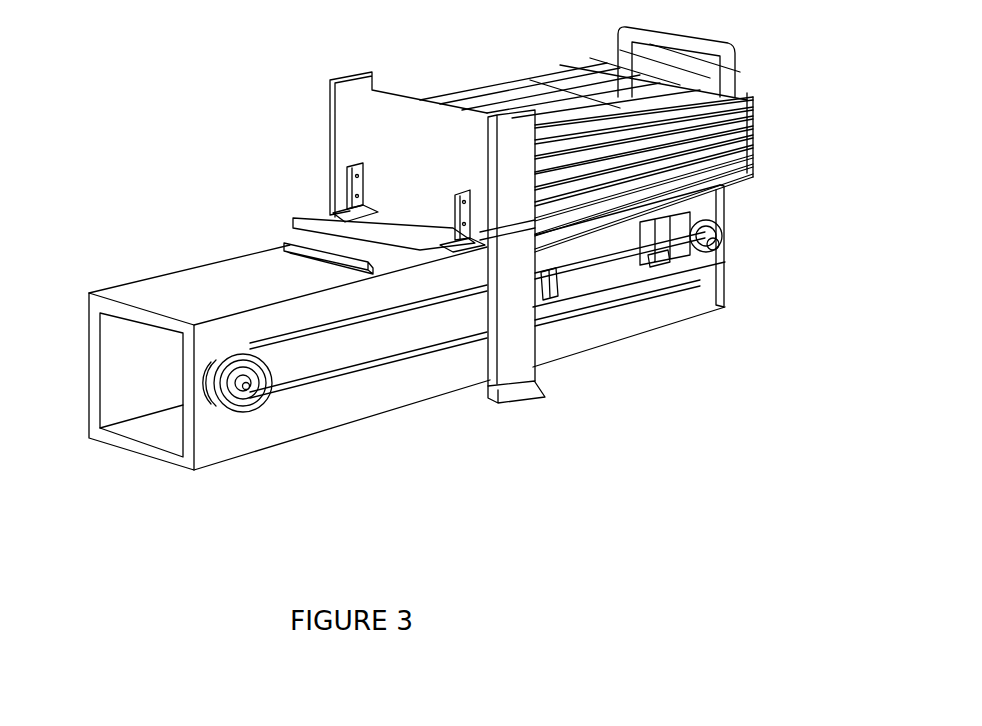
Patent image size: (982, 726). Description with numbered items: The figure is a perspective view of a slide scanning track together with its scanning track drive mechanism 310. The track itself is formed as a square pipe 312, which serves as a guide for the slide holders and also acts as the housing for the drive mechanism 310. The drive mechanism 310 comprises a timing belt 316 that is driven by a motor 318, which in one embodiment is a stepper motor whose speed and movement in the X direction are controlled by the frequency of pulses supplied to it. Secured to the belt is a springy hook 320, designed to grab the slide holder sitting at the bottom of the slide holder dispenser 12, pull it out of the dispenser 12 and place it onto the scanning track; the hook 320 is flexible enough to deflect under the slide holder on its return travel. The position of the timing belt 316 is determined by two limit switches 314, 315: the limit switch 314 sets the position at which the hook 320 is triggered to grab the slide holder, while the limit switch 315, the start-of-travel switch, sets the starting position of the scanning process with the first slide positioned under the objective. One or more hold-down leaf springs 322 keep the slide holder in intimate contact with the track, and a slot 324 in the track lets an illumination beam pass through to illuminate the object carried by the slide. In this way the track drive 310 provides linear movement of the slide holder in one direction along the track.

The slide holder dispenser 12 is at (742, 36).
The scanning track drive mechanism 310 is at (400, 392).
The square pipe 312 is at (154, 291).
The limit switch 314 is at (666, 275).
The limit switch 315 is at (554, 314).
The timing belt 316 is at (307, 400).
The motor 318 is at (223, 420).
The springy hook 320 is at (735, 208).
The hold-down leaf spring 322 is at (323, 203).
The slot 324 is at (301, 245).